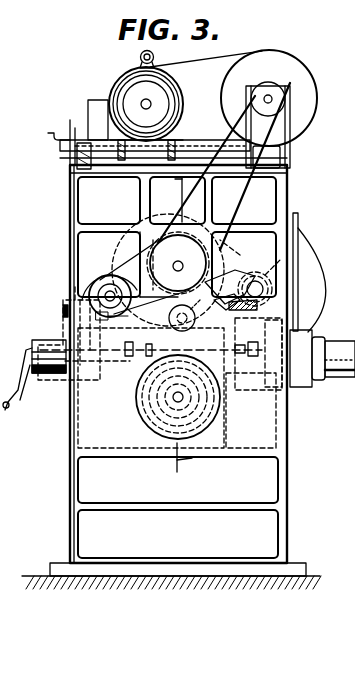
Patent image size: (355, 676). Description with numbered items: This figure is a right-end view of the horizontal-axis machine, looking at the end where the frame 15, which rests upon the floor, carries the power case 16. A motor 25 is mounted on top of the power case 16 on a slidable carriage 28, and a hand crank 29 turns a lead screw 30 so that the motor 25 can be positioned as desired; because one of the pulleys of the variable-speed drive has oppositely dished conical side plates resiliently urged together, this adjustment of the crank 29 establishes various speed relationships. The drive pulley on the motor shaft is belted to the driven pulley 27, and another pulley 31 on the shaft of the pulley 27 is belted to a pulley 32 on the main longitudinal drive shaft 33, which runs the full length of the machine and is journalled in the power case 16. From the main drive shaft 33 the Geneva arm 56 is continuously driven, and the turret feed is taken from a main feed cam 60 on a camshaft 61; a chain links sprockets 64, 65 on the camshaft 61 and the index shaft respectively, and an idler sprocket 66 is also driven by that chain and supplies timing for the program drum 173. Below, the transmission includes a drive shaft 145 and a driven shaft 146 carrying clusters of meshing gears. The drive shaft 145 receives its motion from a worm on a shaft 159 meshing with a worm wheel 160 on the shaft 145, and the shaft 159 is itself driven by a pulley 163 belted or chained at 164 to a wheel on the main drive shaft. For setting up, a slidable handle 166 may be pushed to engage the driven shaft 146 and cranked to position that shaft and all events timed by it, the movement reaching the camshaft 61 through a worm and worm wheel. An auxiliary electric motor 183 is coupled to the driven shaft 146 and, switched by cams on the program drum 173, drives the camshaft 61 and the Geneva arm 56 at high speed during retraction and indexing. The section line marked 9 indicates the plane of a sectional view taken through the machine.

The section line 9- 9 is at (177, 326).
The frame 15 is at (82, 488).
The power case 16 is at (288, 186).
The motor 25 is at (141, 73).
The driven pulley 27 is at (295, 64).
The slidable carriage 28 is at (110, 142).
The hand crank 29 is at (55, 138).
The lead screw 30 is at (99, 163).
The pulley 31 is at (283, 98).
The pulley 32 is at (237, 229).
The main longitudinal drive shaft 33 is at (178, 261).
The Geneva arm 56 is at (298, 226).
The main feed cam 60 is at (137, 389).
The camshaft 61 is at (184, 397).
The sprocket 64 is at (140, 411).
The sprocket 65 is at (266, 283).
The idler sprocket 66 is at (162, 352).
The drive shaft 145 is at (63, 320).
The driven shaft 146 is at (48, 368).
The shaft 159 is at (102, 290).
The worm wheel 160 is at (169, 326).
The pulley 163 is at (102, 277).
The belt 164 is at (127, 258).
The slidable handle 166 is at (8, 412).
The program drum 173 is at (214, 413).
The electric motor 183 is at (335, 343).